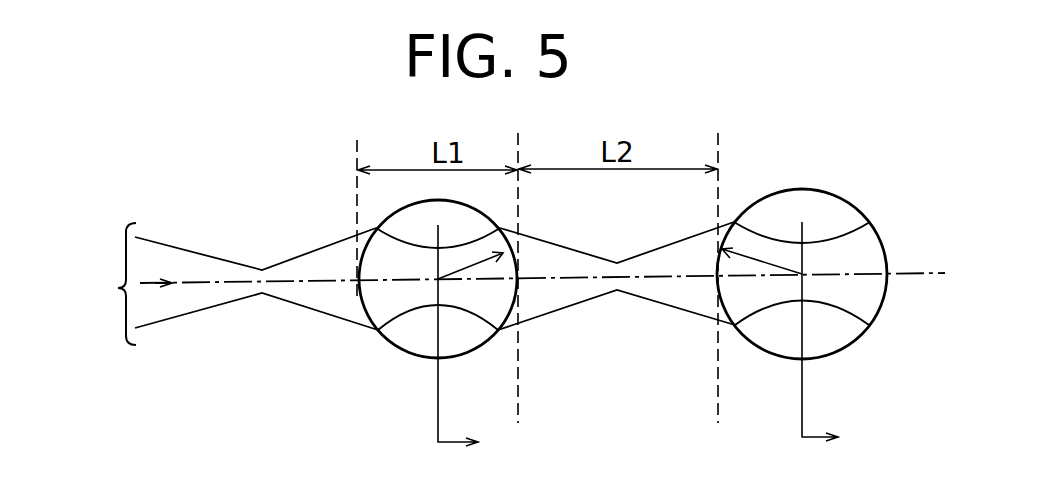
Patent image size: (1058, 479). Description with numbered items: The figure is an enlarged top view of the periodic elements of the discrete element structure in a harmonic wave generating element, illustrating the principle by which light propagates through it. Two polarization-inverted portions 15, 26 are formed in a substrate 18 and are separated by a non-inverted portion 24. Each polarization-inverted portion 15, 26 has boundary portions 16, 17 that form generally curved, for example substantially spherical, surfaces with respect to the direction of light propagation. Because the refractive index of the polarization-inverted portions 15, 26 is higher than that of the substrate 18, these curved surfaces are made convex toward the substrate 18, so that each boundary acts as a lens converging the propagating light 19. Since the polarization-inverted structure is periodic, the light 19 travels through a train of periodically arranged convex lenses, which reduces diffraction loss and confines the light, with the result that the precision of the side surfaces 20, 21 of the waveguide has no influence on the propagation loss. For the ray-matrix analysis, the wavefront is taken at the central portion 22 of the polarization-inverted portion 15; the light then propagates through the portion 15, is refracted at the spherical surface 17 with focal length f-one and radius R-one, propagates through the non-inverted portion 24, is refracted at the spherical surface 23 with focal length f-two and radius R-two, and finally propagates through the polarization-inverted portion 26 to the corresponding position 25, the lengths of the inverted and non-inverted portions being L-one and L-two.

The polarization-inverted portion 15 is at (514, 305).
The boundary portion 16 is at (361, 295).
The boundary portion 17 is at (520, 263).
The substrate 18 is at (408, 353).
The propagating light 19 is at (113, 290).
The side surface of the waveguide 20 is at (440, 200).
The side surface of the waveguide 21 is at (797, 189).
The central portion of the polarization-inverted portion 22 is at (438, 280).
The boundary surface 23 is at (717, 282).
The non-inverted portion 24 is at (648, 268).
The corresponding position of the next polarization-inverted portion 25 is at (808, 268).
The polarization-inverted portion 26 is at (822, 332).